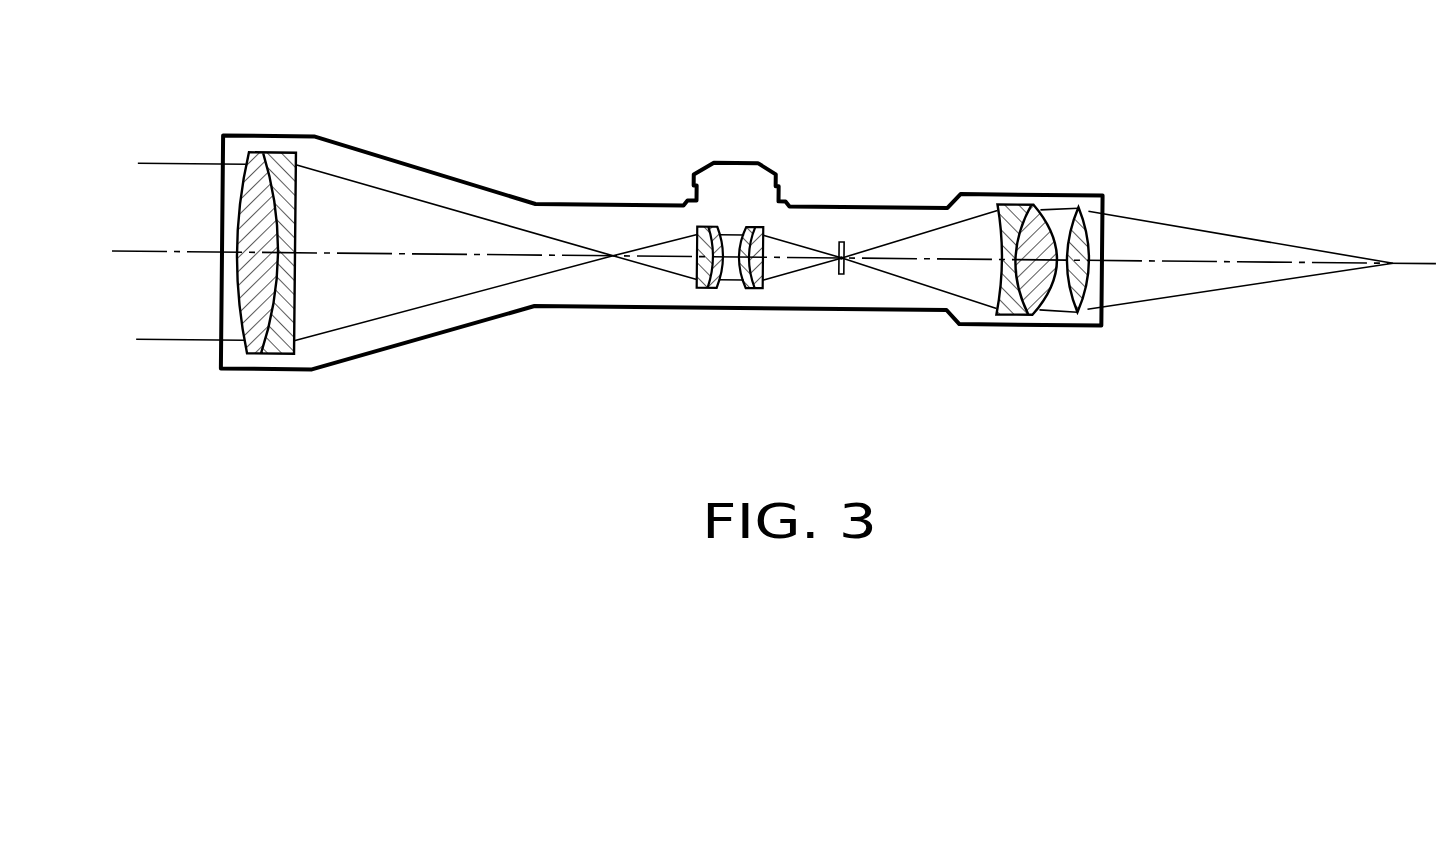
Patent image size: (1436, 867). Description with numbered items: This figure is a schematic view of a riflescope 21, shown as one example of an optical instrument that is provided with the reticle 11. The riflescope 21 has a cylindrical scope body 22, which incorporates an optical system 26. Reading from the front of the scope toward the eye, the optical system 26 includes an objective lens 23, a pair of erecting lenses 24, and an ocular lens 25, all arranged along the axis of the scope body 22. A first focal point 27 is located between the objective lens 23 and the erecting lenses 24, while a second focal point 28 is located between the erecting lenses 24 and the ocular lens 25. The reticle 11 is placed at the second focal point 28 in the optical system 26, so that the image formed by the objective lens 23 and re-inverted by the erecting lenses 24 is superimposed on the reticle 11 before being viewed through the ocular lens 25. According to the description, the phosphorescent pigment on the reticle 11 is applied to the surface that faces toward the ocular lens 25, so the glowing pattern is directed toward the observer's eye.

The riflescope 21 is at (792, 91).
The scope body 22 is at (560, 201).
The objective lens 23 is at (295, 383).
The erecting lenses 24 is at (765, 320).
The ocular lens 25 is at (1088, 332).
The optical system 26 is at (910, 254).
The first focal point 27 is at (613, 253).
The second focal point 28 is at (843, 268).
The reticle 11 is at (841, 234).